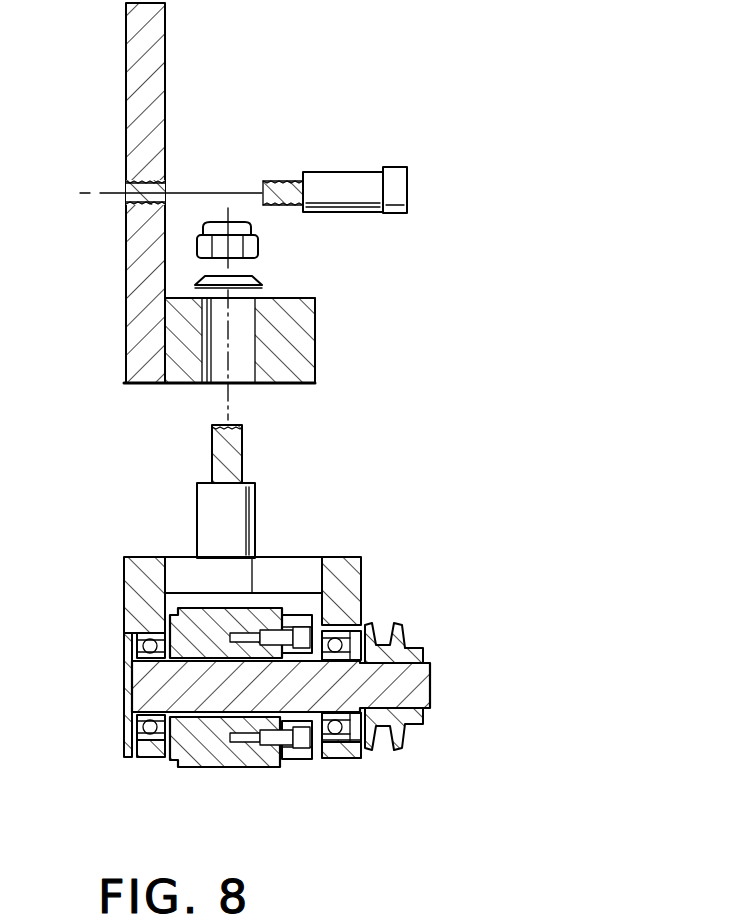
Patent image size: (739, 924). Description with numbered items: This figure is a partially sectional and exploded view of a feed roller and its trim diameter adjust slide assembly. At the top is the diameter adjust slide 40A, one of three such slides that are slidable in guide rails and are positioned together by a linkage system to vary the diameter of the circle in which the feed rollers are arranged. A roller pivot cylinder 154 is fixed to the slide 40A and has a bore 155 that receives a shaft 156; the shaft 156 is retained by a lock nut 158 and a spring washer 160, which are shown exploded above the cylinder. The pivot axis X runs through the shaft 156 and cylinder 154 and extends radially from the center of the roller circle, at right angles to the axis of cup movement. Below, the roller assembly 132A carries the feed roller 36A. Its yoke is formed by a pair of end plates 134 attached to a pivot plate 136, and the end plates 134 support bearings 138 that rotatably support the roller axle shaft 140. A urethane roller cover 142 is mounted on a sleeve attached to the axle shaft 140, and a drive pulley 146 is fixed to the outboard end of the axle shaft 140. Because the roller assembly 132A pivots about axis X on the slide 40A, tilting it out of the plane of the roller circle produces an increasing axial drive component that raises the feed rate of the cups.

The diameter adjust slide 40A is at (157, 88).
The lock nut 158 is at (258, 242).
The spring washer 160 is at (262, 283).
The bore 155 is at (246, 325).
The roller pivot cylinder 154 is at (315, 358).
The pivot axis X is at (228, 398).
The shaft 156 is at (205, 494).
The end plates 134 is at (135, 570).
The pivot plate 136 is at (268, 565).
The roller axle shaft 140 is at (145, 678).
The bearings 138 is at (137, 718).
The urethane roller cover 142 is at (236, 763).
The feed roller 36A is at (194, 768).
The roller assembly 132A is at (88, 762).
The drive pulley 146 is at (410, 643).